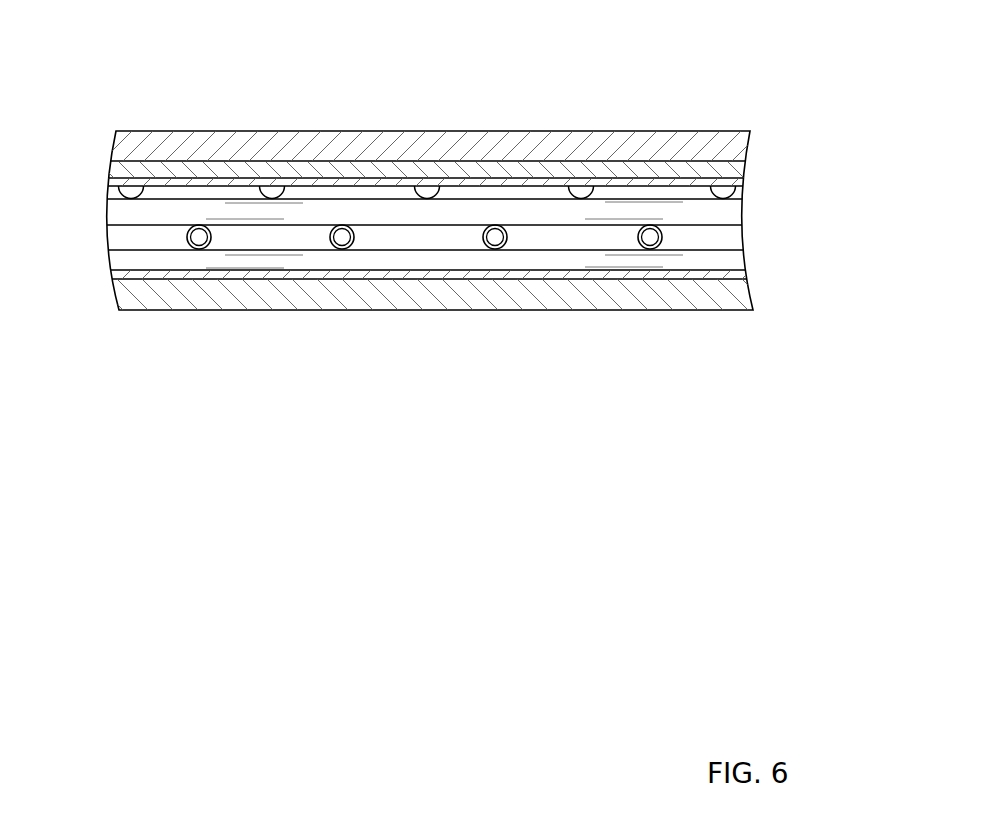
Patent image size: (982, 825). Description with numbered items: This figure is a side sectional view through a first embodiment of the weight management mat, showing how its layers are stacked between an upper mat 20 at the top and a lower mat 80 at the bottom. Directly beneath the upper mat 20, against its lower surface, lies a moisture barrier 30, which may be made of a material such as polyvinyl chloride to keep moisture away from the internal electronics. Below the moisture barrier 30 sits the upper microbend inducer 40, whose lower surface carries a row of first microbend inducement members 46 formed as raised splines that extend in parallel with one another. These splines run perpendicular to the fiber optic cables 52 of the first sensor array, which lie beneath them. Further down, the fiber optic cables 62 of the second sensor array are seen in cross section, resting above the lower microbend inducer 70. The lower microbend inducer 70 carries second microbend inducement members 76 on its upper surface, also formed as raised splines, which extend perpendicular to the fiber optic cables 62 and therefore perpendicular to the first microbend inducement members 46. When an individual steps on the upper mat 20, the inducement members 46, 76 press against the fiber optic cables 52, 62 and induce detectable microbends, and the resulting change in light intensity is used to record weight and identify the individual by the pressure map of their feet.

The upper mat 20 is at (509, 131).
The moisture barrier 30 is at (392, 172).
The upper microbend inducer 40 is at (217, 182).
The first microbend inducement members 46 is at (288, 190).
The fiber optic cables 52 is at (155, 208).
The fiber optic cables 62 is at (186, 237).
The lower microbend inducer 70 is at (305, 272).
The second microbend inducement members 76 is at (362, 260).
The lower mat 80 is at (560, 310).